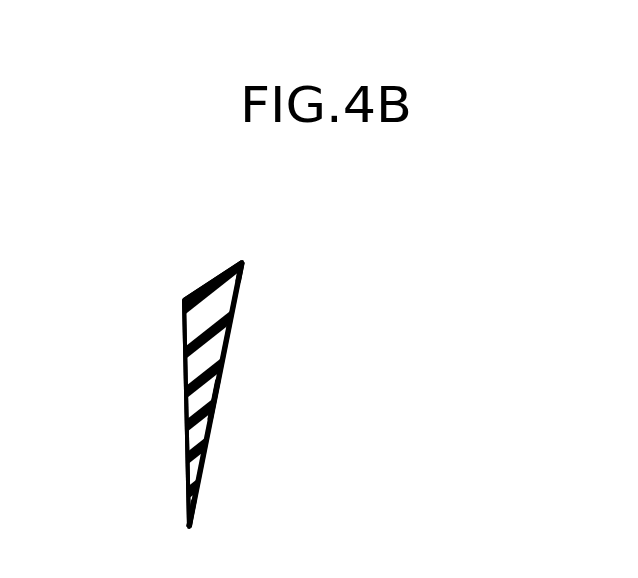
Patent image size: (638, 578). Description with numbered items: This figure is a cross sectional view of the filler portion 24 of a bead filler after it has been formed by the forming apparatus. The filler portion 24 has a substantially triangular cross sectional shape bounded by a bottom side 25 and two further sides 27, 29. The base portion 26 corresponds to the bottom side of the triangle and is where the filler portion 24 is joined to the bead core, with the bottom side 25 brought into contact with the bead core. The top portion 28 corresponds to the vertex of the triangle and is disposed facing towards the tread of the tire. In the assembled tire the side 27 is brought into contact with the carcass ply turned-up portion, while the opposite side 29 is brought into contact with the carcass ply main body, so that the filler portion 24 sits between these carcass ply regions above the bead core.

The filler portion 24 is at (312, 258).
The bottom side 25 is at (197, 277).
The base portion 26 is at (247, 279).
The side 27 is at (173, 347).
The top portion 28 is at (203, 498).
The side 29 is at (220, 431).